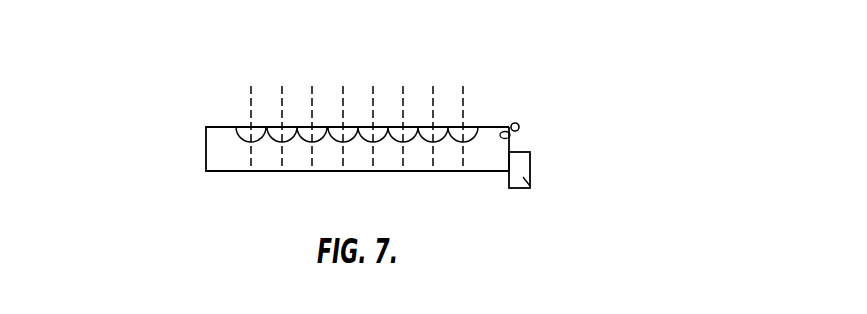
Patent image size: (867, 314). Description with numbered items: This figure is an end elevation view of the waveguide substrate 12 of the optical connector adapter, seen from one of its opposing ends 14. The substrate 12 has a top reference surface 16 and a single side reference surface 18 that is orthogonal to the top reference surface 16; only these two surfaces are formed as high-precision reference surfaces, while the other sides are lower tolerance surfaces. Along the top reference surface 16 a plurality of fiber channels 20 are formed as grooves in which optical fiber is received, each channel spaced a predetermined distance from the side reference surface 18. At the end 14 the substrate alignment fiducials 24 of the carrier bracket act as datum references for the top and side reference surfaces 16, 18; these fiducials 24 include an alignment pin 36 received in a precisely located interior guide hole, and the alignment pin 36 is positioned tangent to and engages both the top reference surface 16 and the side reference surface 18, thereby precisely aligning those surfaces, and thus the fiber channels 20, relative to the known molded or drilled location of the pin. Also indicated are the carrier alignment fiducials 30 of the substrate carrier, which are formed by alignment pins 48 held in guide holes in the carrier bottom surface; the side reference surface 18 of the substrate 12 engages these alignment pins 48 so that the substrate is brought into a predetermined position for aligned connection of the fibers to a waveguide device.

The substrate 12 is at (188, 152).
The opposing end 14 is at (494, 143).
The top reference surface 16 is at (488, 127).
The side reference surface 18 is at (510, 134).
The fiber channels 20 is at (427, 127).
The substrate alignment fiducials 24 is at (553, 87).
The carrier alignment fiducials 30 is at (553, 180).
The alignment pin 36 is at (519, 126).
The alignment pins 48 is at (523, 177).